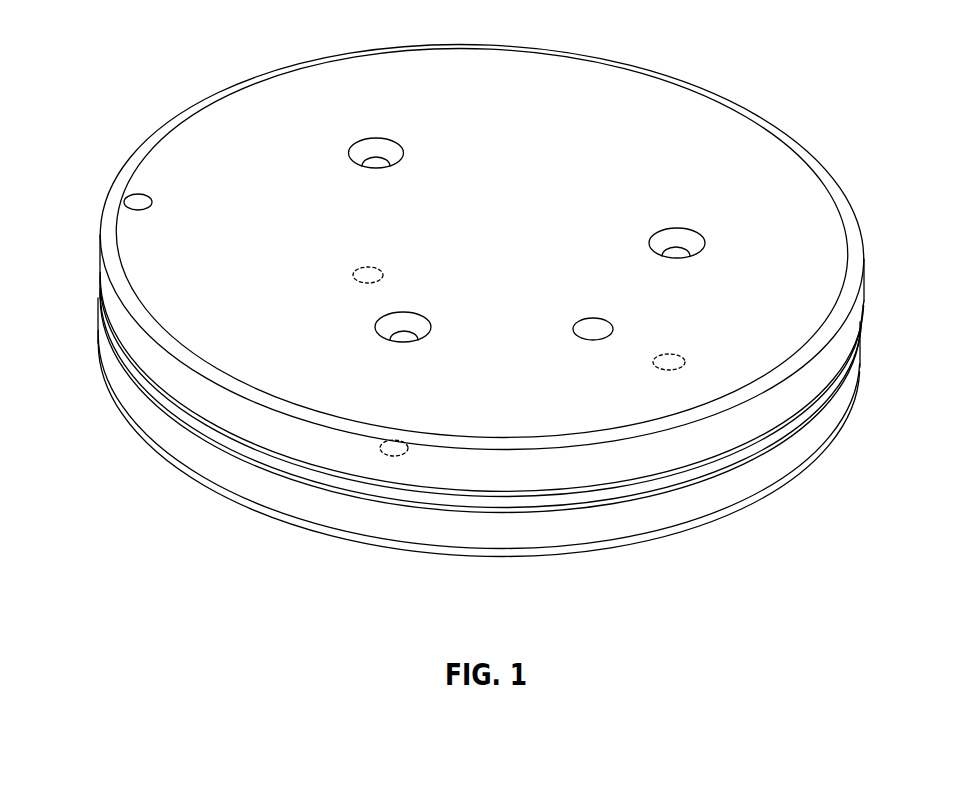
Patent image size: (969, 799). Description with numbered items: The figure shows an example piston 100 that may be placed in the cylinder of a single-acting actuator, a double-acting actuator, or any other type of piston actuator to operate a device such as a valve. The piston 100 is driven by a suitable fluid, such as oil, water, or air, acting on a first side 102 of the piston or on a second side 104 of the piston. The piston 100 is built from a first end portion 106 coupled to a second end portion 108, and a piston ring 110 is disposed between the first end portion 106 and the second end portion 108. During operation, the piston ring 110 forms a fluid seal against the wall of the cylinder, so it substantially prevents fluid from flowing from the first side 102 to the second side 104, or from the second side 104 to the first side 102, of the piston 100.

The piston 100 is at (215, 44).
The first side 102 is at (426, 68).
The second side 104 is at (343, 538).
The first end portion 106 is at (115, 304).
The second end portion 108 is at (193, 448).
The piston ring 110 is at (643, 490).